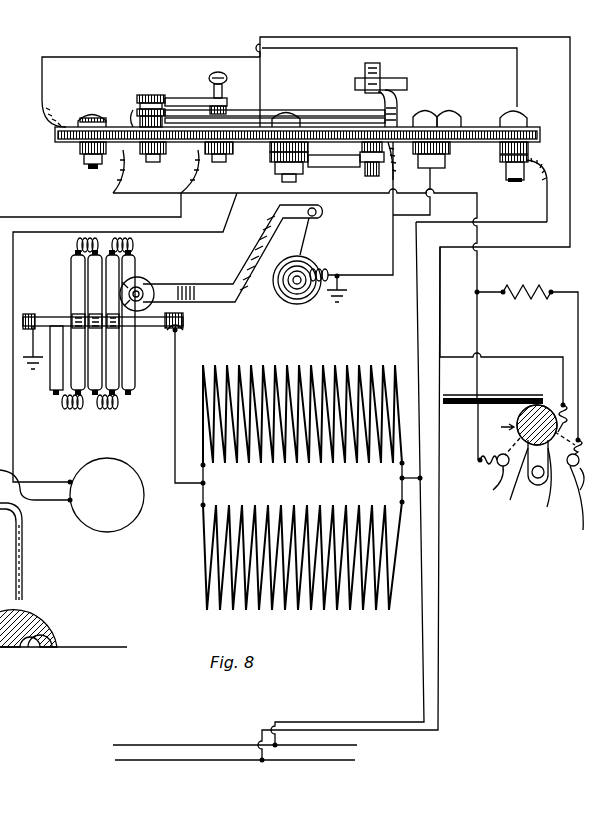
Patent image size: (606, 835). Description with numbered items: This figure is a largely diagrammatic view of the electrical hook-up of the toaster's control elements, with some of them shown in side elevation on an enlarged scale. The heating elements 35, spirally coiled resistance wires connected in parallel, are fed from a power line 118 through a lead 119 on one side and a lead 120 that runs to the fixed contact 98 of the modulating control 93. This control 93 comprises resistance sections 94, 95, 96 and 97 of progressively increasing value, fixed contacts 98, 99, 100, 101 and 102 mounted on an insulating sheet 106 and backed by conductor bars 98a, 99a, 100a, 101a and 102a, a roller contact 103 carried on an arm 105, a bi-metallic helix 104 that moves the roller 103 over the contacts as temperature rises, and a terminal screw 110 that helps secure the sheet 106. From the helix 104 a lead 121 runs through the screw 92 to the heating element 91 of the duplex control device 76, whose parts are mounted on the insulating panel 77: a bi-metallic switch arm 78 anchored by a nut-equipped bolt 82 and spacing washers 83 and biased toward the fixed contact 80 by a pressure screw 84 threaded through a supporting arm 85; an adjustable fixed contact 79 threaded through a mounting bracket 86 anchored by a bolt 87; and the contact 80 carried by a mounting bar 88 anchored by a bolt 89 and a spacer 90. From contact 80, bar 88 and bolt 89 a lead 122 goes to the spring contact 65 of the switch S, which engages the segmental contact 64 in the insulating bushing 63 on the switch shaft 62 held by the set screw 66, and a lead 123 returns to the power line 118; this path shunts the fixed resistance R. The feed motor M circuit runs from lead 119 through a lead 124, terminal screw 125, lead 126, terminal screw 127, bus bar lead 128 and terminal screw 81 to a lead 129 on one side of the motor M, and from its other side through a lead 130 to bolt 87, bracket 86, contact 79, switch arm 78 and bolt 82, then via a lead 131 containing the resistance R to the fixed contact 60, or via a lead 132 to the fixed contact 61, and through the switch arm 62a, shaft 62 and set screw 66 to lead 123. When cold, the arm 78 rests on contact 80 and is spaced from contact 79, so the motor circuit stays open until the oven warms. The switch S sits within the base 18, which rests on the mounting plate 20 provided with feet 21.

The base 18 is at (23, 532).
The mounting plate 20 is at (43, 610).
The feet 21 is at (52, 642).
The heating elements 35 is at (337, 343).
The fixed switch contact 60 is at (577, 472).
The fixed switch contact 61 is at (494, 483).
The switch shaft 62 is at (513, 486).
The switch arm 62a is at (553, 489).
The insulating bushing 63 is at (518, 416).
The segmental switch contact 64 is at (560, 400).
The spring contact 65 is at (495, 395).
The set screw 66 is at (577, 508).
The duplex control device 76 is at (323, 110).
The mounting panel 77 is at (538, 126).
The bi-metallic switch arm 78 is at (238, 108).
The fixed contact 79 is at (382, 70).
The fixed contact 80 is at (366, 174).
The terminal screw 81 is at (230, 160).
The nut-equipped bolt 82 is at (143, 93).
The spacing washers 83 is at (133, 110).
The adjustable pressure screw 84 is at (214, 73).
The supporting arm 85 is at (176, 97).
The mounting bracket 86 is at (403, 97).
The nut-equipped bolt 87 is at (427, 110).
The mounting bar 88 is at (358, 170).
The nut-equipped bolt 89 is at (278, 176).
The spacer 90 is at (312, 158).
The resistance wire heating element 91 is at (310, 107).
The screw 92 is at (455, 110).
The variable resistance control device 93 is at (162, 274).
The resistance section 94 is at (133, 245).
The resistance section 95 is at (105, 410).
The resistance section 96 is at (77, 247).
The resistance section 97 is at (70, 410).
The fixed contact 98 is at (192, 303).
The conductor bar 98a is at (135, 262).
The fixed contact 99 is at (110, 322).
The conductor bar 99a is at (112, 280).
The fixed contact 100 is at (95, 325).
The conductor bar 100a is at (95, 272).
The fixed contact 101 is at (80, 328).
The conductor bar 101a is at (78, 268).
The fixed contact 102 is at (55, 318).
The conductor bar 102a is at (60, 362).
The roller contact 103 is at (155, 280).
The bi-metallic helix 104 is at (310, 267).
The arm 105 is at (237, 302).
The insulating sheet 106 is at (182, 327).
The terminal screw 110 is at (33, 317).
The power line 118 is at (223, 758).
The lead 119 is at (403, 481).
The lead 120 is at (187, 487).
The lead 121 is at (440, 177).
The lead 122 is at (413, 35).
The lead 123 is at (553, 353).
The lead 124 is at (414, 343).
The terminal screw 125 is at (528, 173).
The lead 126 is at (117, 55).
The terminal screw 127 is at (97, 117).
The bus bar lead 128 is at (105, 163).
The lead 129 is at (80, 217).
The lead 130 is at (240, 200).
The lead 131 is at (127, 193).
The lead 132 is at (478, 333).